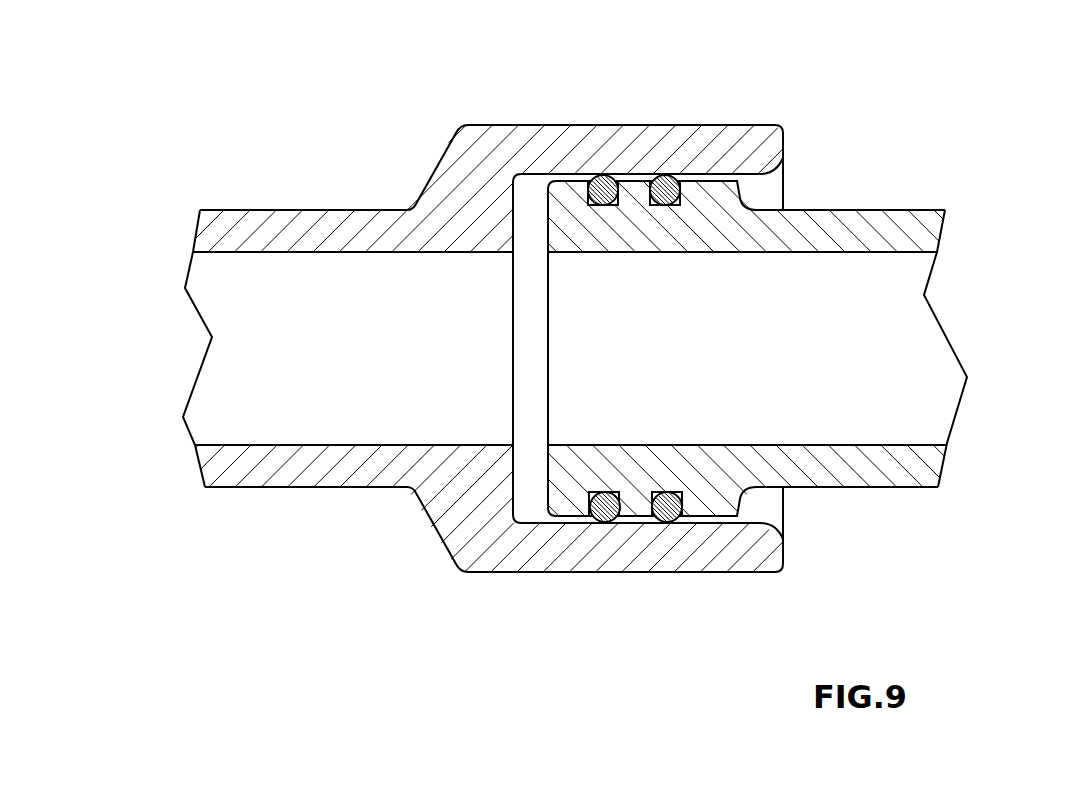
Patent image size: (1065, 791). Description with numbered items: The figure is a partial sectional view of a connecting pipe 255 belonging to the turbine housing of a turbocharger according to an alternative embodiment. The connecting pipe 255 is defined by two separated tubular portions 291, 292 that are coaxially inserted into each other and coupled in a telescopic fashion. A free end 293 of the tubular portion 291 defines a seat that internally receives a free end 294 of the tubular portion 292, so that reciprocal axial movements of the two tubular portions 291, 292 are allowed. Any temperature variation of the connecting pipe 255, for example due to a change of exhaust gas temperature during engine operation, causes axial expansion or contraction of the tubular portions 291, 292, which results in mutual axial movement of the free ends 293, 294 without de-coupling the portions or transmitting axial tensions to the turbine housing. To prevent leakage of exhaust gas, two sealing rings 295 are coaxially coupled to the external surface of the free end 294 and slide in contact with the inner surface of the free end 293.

The connecting pipe 255 is at (299, 137).
The tubular portion 291 is at (210, 235).
The tubular portion 292 is at (917, 223).
The free end 293 is at (688, 132).
The free end 294 is at (574, 208).
The sealing rings 295 is at (605, 507).